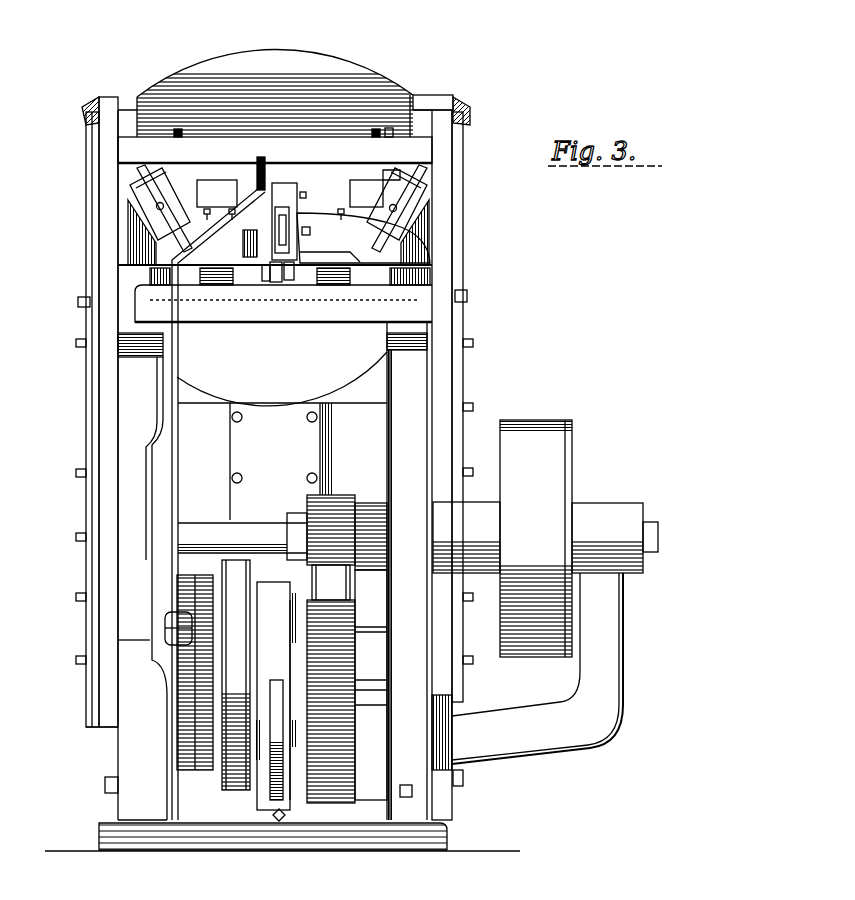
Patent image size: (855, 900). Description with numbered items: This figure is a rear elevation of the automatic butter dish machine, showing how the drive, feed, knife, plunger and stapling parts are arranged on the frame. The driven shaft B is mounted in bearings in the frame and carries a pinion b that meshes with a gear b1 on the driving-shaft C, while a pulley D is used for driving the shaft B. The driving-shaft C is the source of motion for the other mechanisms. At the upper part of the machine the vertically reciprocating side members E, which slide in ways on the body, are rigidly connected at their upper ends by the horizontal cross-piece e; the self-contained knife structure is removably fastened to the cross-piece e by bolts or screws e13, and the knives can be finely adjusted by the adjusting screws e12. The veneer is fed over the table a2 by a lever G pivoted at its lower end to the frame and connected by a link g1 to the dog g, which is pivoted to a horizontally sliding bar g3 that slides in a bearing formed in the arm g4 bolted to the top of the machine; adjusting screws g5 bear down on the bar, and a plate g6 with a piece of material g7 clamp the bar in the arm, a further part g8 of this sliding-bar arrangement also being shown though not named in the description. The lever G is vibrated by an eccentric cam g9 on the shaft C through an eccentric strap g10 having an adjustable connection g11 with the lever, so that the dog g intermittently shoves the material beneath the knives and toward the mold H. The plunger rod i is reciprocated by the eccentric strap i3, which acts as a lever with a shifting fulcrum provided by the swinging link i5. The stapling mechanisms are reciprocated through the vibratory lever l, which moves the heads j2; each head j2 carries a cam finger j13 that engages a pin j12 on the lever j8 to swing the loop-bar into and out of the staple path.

The side members E is at (110, 113).
The head j2 is at (99, 110).
The horizontal cross-piece e is at (297, 60).
The bolts or screws e13 is at (178, 130).
The cam finger j13 is at (137, 173).
The pin j12 is at (140, 193).
The lever j8 is at (167, 220).
The adjusting screws e12 is at (395, 165).
The lever G is at (222, 205).
The dog g is at (276, 272).
The piece of material g7 is at (280, 232).
The cam g8 is at (283, 247).
The link g1 is at (267, 177).
The eccentric cam g9 is at (303, 200).
The adjusting screws g5 is at (282, 205).
The arm g4 is at (375, 130).
The plate g6 is at (270, 262).
The horizontally sliding bar g3 is at (284, 258).
The table a2 is at (445, 300).
The plunger rod i is at (377, 410).
The driven shaft B is at (248, 528).
The pinion b is at (345, 542).
The gear b1 is at (342, 792).
The pulley D is at (568, 443).
The mold H is at (130, 650).
The driving-shaft C is at (167, 653).
The adjustable connection g11 is at (167, 632).
The eccentric strap g10 is at (192, 762).
The vibratory lever l is at (253, 632).
The eccentric strap i3 is at (273, 701).
The swinging link i5 is at (277, 743).